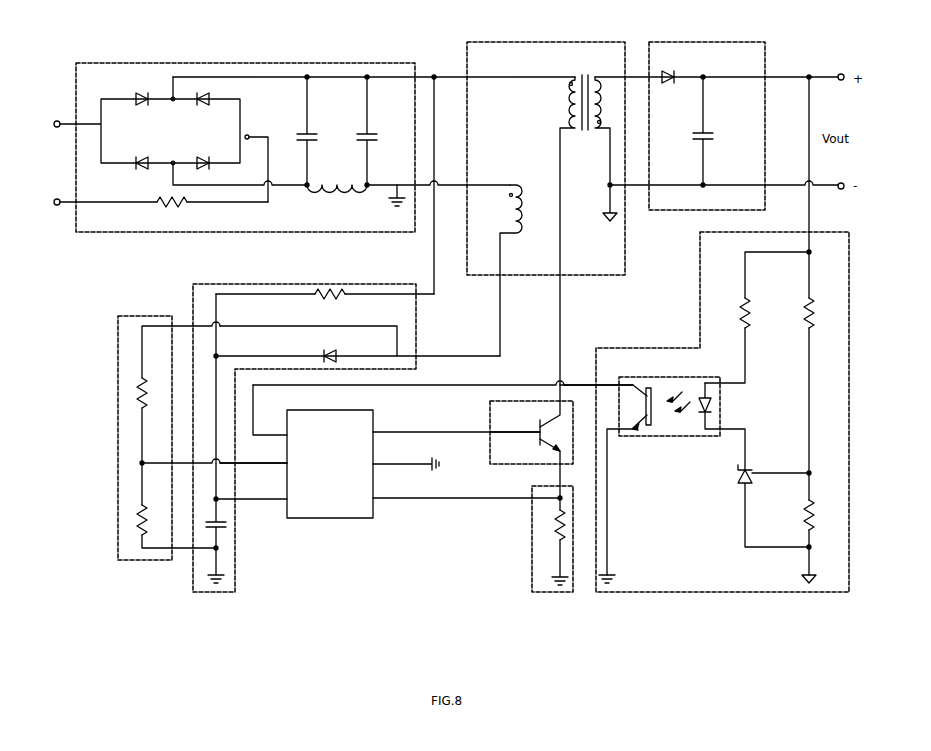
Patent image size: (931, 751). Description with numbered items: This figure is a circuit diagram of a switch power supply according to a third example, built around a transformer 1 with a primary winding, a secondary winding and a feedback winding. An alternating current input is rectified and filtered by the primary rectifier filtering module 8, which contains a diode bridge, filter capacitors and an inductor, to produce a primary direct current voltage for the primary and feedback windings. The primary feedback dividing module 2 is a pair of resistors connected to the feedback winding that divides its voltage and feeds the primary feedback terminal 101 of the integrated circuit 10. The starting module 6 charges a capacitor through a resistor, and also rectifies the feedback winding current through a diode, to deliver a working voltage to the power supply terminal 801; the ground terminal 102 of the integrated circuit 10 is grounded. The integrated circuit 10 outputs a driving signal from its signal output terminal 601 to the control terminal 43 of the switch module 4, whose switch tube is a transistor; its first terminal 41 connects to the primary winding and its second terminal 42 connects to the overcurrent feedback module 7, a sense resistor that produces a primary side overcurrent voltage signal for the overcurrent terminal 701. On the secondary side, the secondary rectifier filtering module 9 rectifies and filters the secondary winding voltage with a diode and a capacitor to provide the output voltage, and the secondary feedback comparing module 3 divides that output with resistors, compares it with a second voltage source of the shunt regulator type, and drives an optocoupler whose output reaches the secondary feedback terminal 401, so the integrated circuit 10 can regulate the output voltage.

The transformer 1 is at (521, 42).
The primary feedback dividing module 2 is at (118, 425).
The secondary feedback comparing module 3 is at (665, 592).
The switch module 4 is at (490, 425).
The starting module 6 is at (250, 284).
The overcurrent feedback module 7 is at (532, 572).
The primary rectifier filtering module 8 is at (236, 63).
The secondary rectifier filtering module 9 is at (704, 42).
The integrated circuit 10 is at (330, 464).
The first terminal of the switch module 41 is at (553, 407).
The second terminal of the switch module 42 is at (550, 468).
The control terminal of the switch module 43 is at (515, 425).
The primary feedback terminal 101 is at (253, 471).
The ground terminal 102 is at (406, 471).
The secondary feedback terminal 401 is at (270, 410).
The signal output terminal 601 is at (456, 424).
The overcurrent terminal 701 is at (466, 507).
The power supply terminal 801 is at (251, 507).